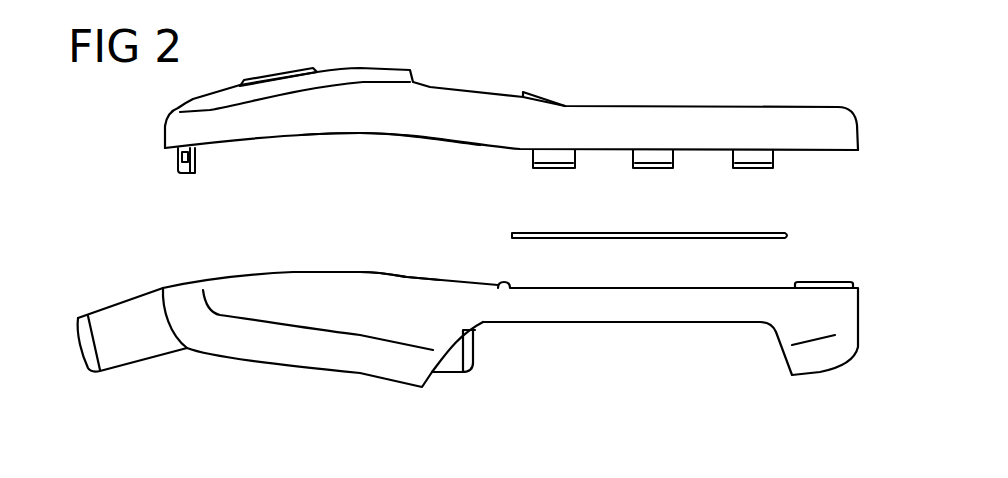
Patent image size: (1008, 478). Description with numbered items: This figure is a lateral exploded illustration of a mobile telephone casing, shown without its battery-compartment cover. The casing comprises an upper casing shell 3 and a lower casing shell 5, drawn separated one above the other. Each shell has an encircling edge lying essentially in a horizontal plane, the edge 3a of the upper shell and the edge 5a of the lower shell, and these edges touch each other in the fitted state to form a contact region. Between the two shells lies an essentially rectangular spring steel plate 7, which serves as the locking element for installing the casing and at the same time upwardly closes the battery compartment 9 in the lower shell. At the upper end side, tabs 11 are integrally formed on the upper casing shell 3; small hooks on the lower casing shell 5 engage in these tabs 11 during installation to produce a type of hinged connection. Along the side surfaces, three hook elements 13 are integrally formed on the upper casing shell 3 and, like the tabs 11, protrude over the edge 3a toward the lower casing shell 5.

The upper casing shell 3 is at (631, 125).
The encircling edge 3a is at (418, 180).
The lower casing shell 5 is at (290, 288).
The encircling edge 5a is at (375, 272).
The spring steel plate 7 is at (793, 207).
The battery compartment 9 is at (612, 352).
The tabs 11 is at (176, 170).
The hook elements 13 is at (747, 165).